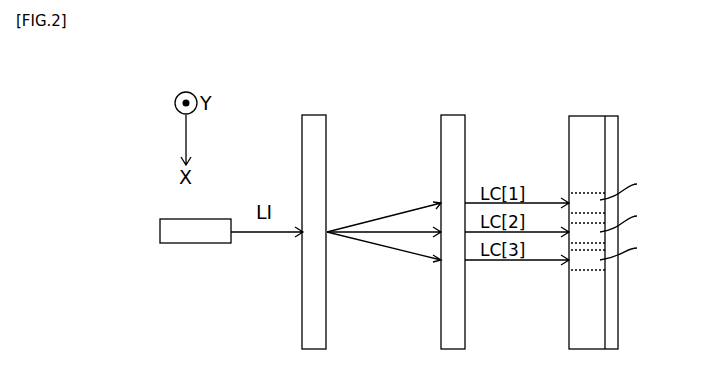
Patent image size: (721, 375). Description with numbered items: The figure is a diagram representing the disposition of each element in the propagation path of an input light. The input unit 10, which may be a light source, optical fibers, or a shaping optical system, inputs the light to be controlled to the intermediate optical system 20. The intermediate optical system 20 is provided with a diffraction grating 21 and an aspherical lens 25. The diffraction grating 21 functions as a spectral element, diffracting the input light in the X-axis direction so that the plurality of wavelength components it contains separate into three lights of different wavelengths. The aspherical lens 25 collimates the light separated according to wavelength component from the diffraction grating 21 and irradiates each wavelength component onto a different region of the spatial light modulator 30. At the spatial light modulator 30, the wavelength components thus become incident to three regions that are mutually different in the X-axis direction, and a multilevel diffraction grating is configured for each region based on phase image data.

The input unit 10 is at (160, 229).
The intermediate optical system 20 is at (490, 87).
The diffraction grating 21 is at (322, 115).
The aspherical lens 25 is at (460, 115).
The spatial light modulator 30 is at (602, 116).